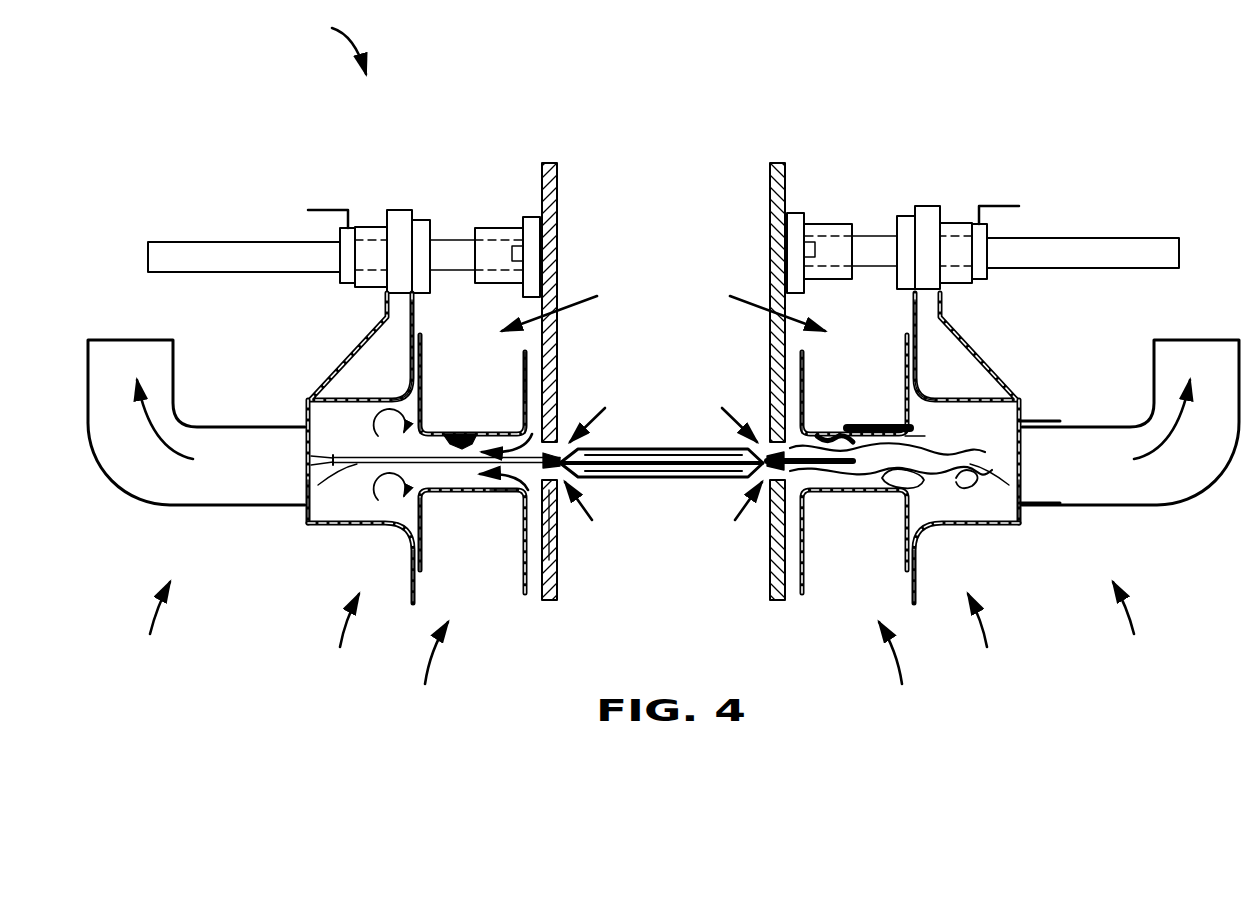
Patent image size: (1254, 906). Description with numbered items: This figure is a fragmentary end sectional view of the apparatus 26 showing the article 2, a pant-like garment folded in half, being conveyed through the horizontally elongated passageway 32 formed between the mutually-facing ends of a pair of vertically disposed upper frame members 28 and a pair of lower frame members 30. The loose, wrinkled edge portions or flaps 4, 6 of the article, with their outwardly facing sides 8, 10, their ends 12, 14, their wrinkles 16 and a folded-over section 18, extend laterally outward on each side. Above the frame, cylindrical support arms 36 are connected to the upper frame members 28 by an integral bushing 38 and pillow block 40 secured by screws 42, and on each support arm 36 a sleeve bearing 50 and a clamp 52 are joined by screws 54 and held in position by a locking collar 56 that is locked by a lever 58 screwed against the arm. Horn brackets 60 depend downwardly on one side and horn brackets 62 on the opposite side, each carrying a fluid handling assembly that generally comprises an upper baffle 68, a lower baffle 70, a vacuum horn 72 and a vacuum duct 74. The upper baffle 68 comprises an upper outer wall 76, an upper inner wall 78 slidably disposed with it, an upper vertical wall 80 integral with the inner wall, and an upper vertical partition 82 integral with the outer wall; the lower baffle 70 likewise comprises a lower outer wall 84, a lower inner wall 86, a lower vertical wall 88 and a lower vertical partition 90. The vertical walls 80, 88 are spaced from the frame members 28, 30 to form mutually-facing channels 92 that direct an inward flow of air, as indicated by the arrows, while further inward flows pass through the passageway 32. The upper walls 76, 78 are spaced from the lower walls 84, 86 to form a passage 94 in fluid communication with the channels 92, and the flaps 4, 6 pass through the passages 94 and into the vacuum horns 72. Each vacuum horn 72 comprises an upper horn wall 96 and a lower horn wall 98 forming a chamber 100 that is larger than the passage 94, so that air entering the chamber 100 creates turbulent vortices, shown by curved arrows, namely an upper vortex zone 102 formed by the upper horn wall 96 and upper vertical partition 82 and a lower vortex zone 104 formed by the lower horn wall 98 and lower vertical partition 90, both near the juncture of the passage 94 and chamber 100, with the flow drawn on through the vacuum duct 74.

The article 2 is at (654, 448).
The flaps 4 is at (333, 455).
The flaps 6 is at (358, 468).
The outwardly facing sides 8 is at (425, 430).
The outwardly facing sides 10 is at (450, 497).
The ends 12 is at (333, 460).
The ends 14 is at (313, 495).
The wrinkles 16 is at (840, 430).
The folded-over section 18 is at (910, 434).
The assembly 26 is at (329, 41).
The upper frame members 28 is at (548, 163).
The lower frame members 30 is at (546, 603).
The passageway 32 is at (588, 410).
The support arms 36 is at (232, 242).
The bushing 38 is at (463, 228).
The pillow block 40 is at (530, 217).
The screws 42 is at (512, 252).
The sleeve bearings 50 is at (373, 227).
The clamps 52 is at (422, 210).
The screws 54 is at (433, 235).
The locking collar 56 is at (341, 283).
The lever 58 is at (325, 210).
The horn brackets 60 is at (387, 317).
The horn brackets 62 is at (968, 352).
The upper baffle 68 is at (663, 304).
The lower baffle 70 is at (661, 668).
The vacuum horn 72 is at (658, 635).
The vacuum duct 74 is at (654, 526).
The upper outer wall 76 is at (450, 433).
The upper inner wall 78 is at (500, 433).
The upper vertical wall 80 is at (532, 378).
The upper vertical partition 82 is at (412, 357).
The lower outer wall 84 is at (428, 497).
The lower inner wall 86 is at (500, 492).
The lower vertical wall 88 is at (535, 542).
The lower vertical partition 90 is at (427, 572).
The channels 92 is at (530, 354).
The passage 94 is at (473, 430).
The upper horn wall 96 is at (340, 398).
The lower horn wall 98 is at (327, 528).
The chamber 100 is at (1013, 490).
The upper vortex zone 102 is at (376, 418).
The lower vortex zone 104 is at (372, 508).